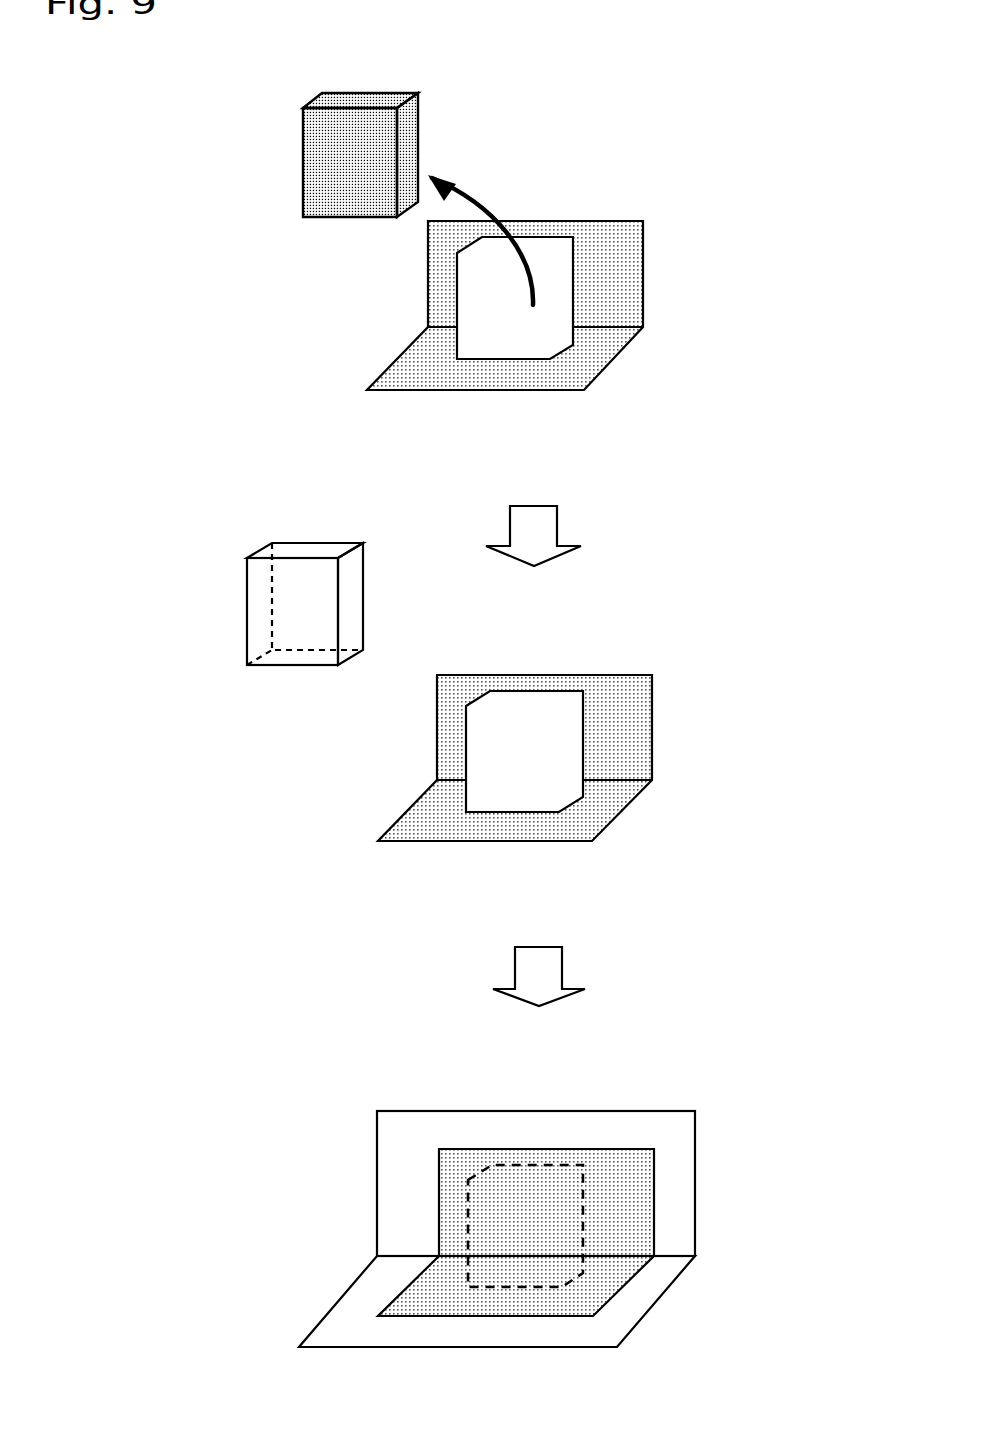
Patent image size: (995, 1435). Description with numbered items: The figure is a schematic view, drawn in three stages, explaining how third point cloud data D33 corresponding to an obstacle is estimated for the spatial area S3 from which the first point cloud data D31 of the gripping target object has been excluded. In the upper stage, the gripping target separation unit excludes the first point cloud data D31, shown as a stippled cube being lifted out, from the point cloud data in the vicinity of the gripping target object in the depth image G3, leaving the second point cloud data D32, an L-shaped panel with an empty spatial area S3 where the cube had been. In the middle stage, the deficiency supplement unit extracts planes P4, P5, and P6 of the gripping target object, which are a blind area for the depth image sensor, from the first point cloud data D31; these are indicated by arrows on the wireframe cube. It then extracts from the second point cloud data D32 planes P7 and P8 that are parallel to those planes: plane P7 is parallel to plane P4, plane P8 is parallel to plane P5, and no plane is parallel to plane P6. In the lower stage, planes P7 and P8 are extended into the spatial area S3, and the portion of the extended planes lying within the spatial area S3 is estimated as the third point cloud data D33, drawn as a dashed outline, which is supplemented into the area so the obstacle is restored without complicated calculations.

The first point cloud data D31 is at (419, 94).
The second point cloud data D32 is at (442, 298).
The third point cloud data D33 is at (522, 1225).
The depth image G3 is at (628, 190).
The spatial area S3 is at (537, 346).
The plane P4 is at (311, 536).
The plane P5 is at (304, 670).
The plane P6 is at (241, 614).
The plane P7 is at (654, 721).
The plane P8 is at (623, 810).